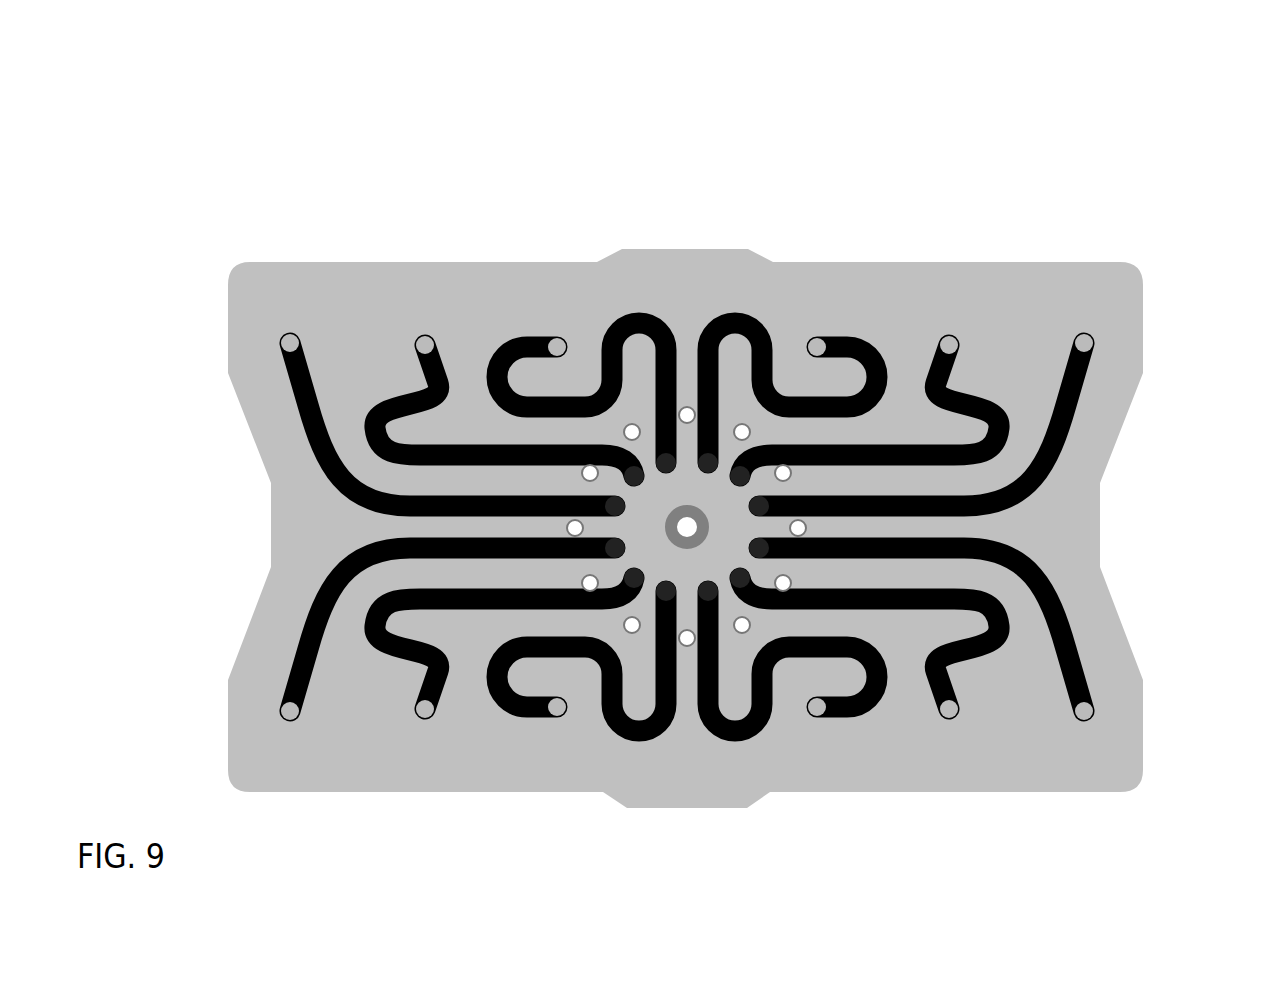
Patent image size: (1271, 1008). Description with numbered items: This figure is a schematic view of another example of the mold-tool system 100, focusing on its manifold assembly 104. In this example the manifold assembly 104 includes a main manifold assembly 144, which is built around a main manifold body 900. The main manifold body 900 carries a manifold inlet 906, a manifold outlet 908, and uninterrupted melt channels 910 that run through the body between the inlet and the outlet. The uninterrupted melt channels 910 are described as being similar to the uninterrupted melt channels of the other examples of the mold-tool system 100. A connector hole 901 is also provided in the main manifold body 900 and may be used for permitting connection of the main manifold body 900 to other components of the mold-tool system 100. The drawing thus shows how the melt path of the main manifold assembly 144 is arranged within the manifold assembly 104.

The mold-tool system 100 is at (258, 37).
The manifold assembly 104 is at (502, 78).
The main manifold assembly 144 is at (765, 132).
The main manifold body 900 is at (683, 267).
The connector hole 901 is at (640, 420).
The manifold inlet 906 is at (635, 583).
The manifold outlet 908 is at (953, 337).
The uninterrupted melt channels 910 is at (1058, 433).